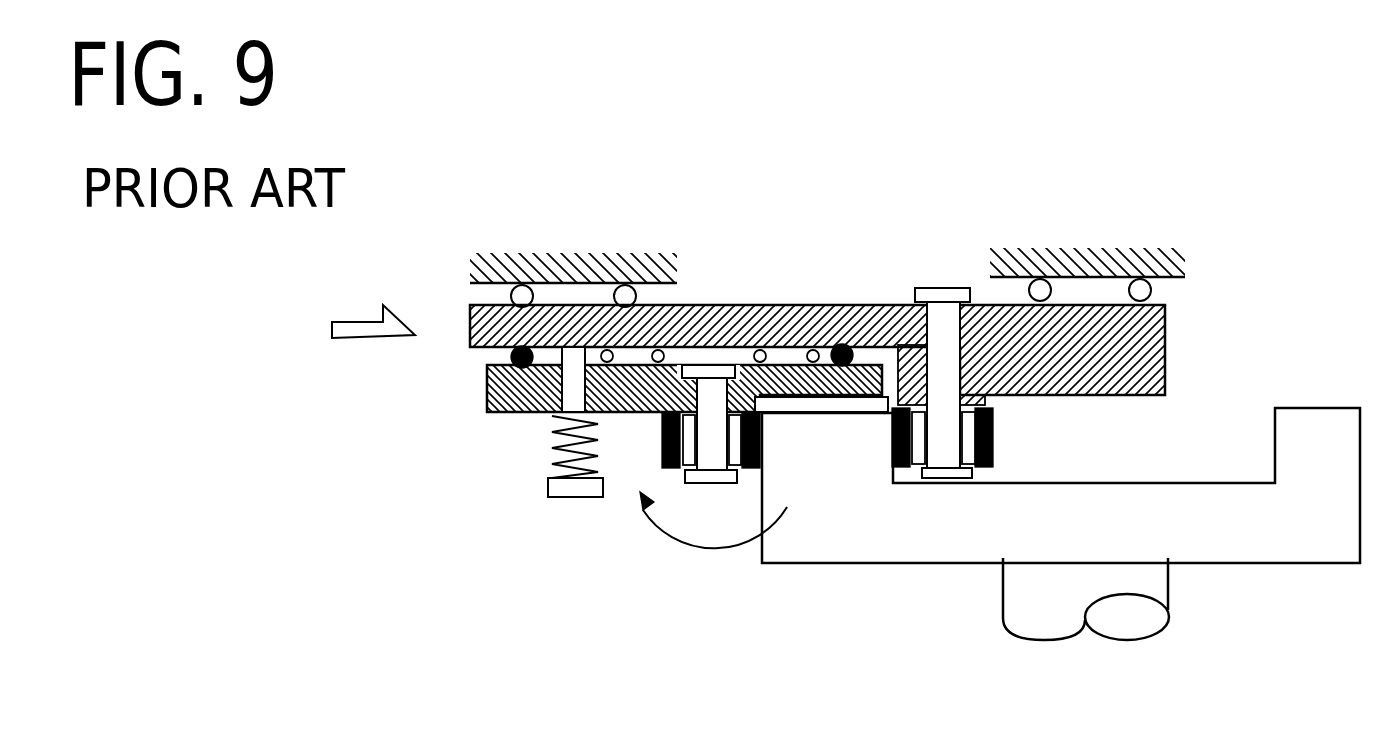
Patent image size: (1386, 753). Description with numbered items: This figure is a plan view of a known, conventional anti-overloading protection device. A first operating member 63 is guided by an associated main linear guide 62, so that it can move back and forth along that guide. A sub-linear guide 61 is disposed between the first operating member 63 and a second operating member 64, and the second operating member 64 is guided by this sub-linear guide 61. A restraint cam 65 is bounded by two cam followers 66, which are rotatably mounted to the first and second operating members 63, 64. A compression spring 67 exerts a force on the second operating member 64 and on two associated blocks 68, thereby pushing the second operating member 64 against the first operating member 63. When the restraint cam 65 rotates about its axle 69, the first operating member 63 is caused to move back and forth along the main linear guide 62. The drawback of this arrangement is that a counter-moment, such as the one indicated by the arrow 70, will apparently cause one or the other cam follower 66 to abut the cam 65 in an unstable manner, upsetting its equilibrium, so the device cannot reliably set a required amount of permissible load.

The sub-linear guide 61 is at (801, 375).
The main linear guide 62 is at (1093, 288).
The first operating member 63 is at (1167, 338).
The second operating member 64 is at (505, 413).
The restraint cam 65 is at (1310, 545).
The cam follower 66 is at (662, 470).
The compression spring 67 is at (551, 482).
The block 68 is at (487, 402).
The axle 69 is at (1155, 596).
The arrow 70 is at (712, 547).